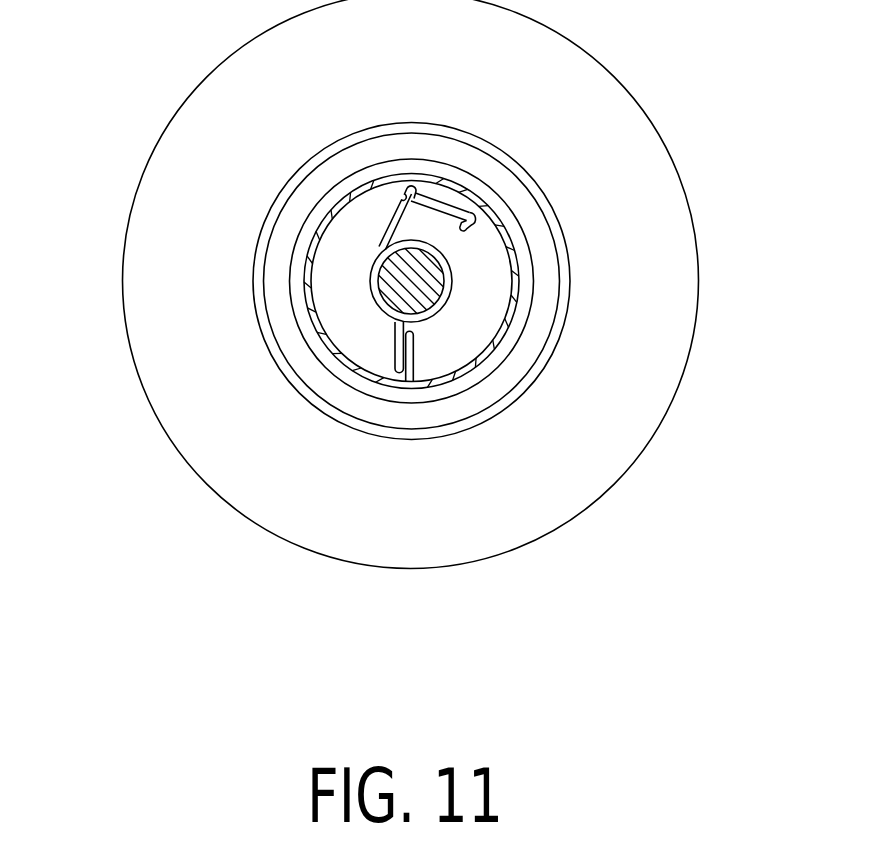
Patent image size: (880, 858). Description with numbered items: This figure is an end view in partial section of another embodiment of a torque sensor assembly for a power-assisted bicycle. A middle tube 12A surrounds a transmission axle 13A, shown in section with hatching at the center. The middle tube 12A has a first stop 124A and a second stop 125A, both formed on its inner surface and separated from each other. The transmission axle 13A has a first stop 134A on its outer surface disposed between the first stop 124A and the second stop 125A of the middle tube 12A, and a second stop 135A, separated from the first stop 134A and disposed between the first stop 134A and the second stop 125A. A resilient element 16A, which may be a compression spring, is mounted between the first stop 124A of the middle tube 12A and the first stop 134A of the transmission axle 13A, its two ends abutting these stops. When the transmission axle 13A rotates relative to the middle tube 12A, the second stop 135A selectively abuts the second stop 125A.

The middle tube 12A is at (502, 233).
The transmission axle 13A is at (388, 288).
The resilient element 16A is at (435, 203).
The first stop of the middle tube 124A is at (468, 207).
The second stop of the middle tube 125A is at (410, 355).
The first stop of the transmission axle 134A is at (390, 224).
The second stop of the transmission axle 135A is at (400, 347).